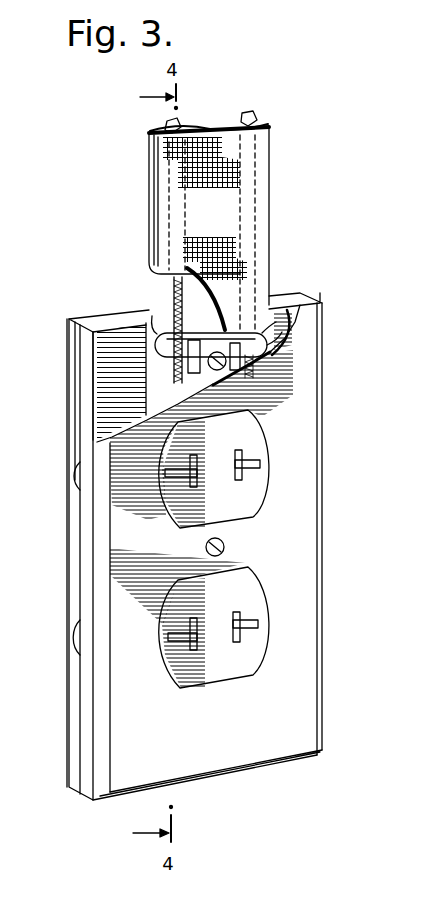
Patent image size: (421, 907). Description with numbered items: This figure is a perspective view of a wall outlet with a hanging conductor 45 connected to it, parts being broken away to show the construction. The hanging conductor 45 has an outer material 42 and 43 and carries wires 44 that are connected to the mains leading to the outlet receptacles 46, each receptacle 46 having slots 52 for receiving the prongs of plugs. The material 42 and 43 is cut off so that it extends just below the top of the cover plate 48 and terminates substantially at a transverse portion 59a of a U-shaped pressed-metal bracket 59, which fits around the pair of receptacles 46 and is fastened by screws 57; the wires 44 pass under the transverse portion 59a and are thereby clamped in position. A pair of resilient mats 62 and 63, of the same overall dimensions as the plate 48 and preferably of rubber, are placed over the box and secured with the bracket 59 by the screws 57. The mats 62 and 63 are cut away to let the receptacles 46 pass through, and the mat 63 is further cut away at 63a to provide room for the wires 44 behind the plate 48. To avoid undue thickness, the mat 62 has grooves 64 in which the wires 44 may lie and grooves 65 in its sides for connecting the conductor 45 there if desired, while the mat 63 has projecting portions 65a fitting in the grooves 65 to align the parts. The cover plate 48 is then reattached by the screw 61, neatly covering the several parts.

The material of the hanging conductor 42 is at (151, 166).
The material of the hanging conductor 43 is at (204, 132).
The wires 44 is at (170, 128).
The hanging conductor 45 is at (272, 211).
The receptacle 46 is at (245, 485).
The cover plate 48 is at (298, 655).
The slots 52 is at (245, 460).
The screws 57 is at (242, 383).
The metal bracket 59 is at (205, 338).
The transverse portion 59a is at (250, 333).
The screw 61 is at (206, 547).
The mat 62 is at (72, 353).
The mat 63 is at (88, 401).
The cut-away portion 63a is at (143, 372).
The grooves 64 is at (157, 325).
The grooves 65 is at (82, 487).
The projecting portions 65a is at (75, 472).